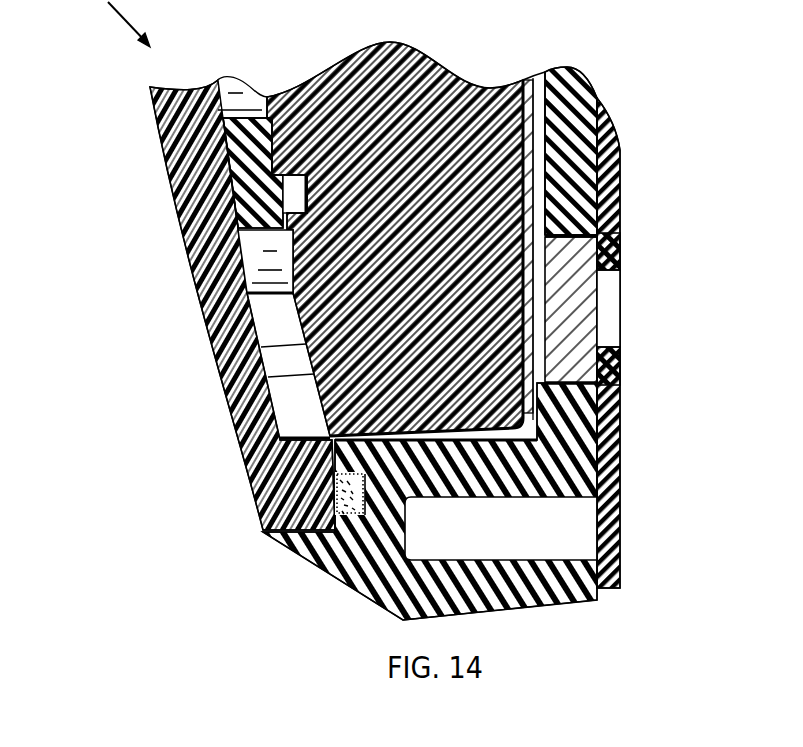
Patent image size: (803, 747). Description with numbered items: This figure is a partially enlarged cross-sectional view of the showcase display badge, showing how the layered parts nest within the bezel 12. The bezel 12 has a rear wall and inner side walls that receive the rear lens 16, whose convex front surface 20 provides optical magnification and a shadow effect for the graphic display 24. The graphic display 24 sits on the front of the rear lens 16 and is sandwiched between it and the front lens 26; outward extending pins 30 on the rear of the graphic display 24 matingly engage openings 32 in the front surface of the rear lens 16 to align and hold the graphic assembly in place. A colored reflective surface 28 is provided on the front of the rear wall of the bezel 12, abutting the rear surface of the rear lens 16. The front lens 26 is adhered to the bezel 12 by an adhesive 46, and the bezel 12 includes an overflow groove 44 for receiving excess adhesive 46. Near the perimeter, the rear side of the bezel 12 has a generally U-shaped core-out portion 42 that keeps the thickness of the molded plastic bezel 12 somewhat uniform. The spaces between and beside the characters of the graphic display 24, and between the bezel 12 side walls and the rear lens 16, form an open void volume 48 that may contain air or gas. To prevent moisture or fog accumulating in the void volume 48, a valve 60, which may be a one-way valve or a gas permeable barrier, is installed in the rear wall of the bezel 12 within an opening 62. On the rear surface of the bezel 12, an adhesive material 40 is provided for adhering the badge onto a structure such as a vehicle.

The bezel 12 is at (310, 570).
The rear lens 16 is at (261, 347).
The front surface of rear lens 20 is at (268, 377).
The graphic display 24 is at (253, 242).
The front lens 26 is at (190, 310).
The colored reflective surface 28 is at (533, 182).
The pins 30 is at (337, 170).
The openings 32 is at (320, 187).
The adhesive material 40 is at (620, 432).
The core-out portion 42 is at (573, 522).
The overflow groove 44 is at (335, 497).
The adhesive 46 is at (367, 503).
The void volume 48 is at (280, 438).
The valve 60 is at (580, 327).
The opening 62 is at (620, 262).